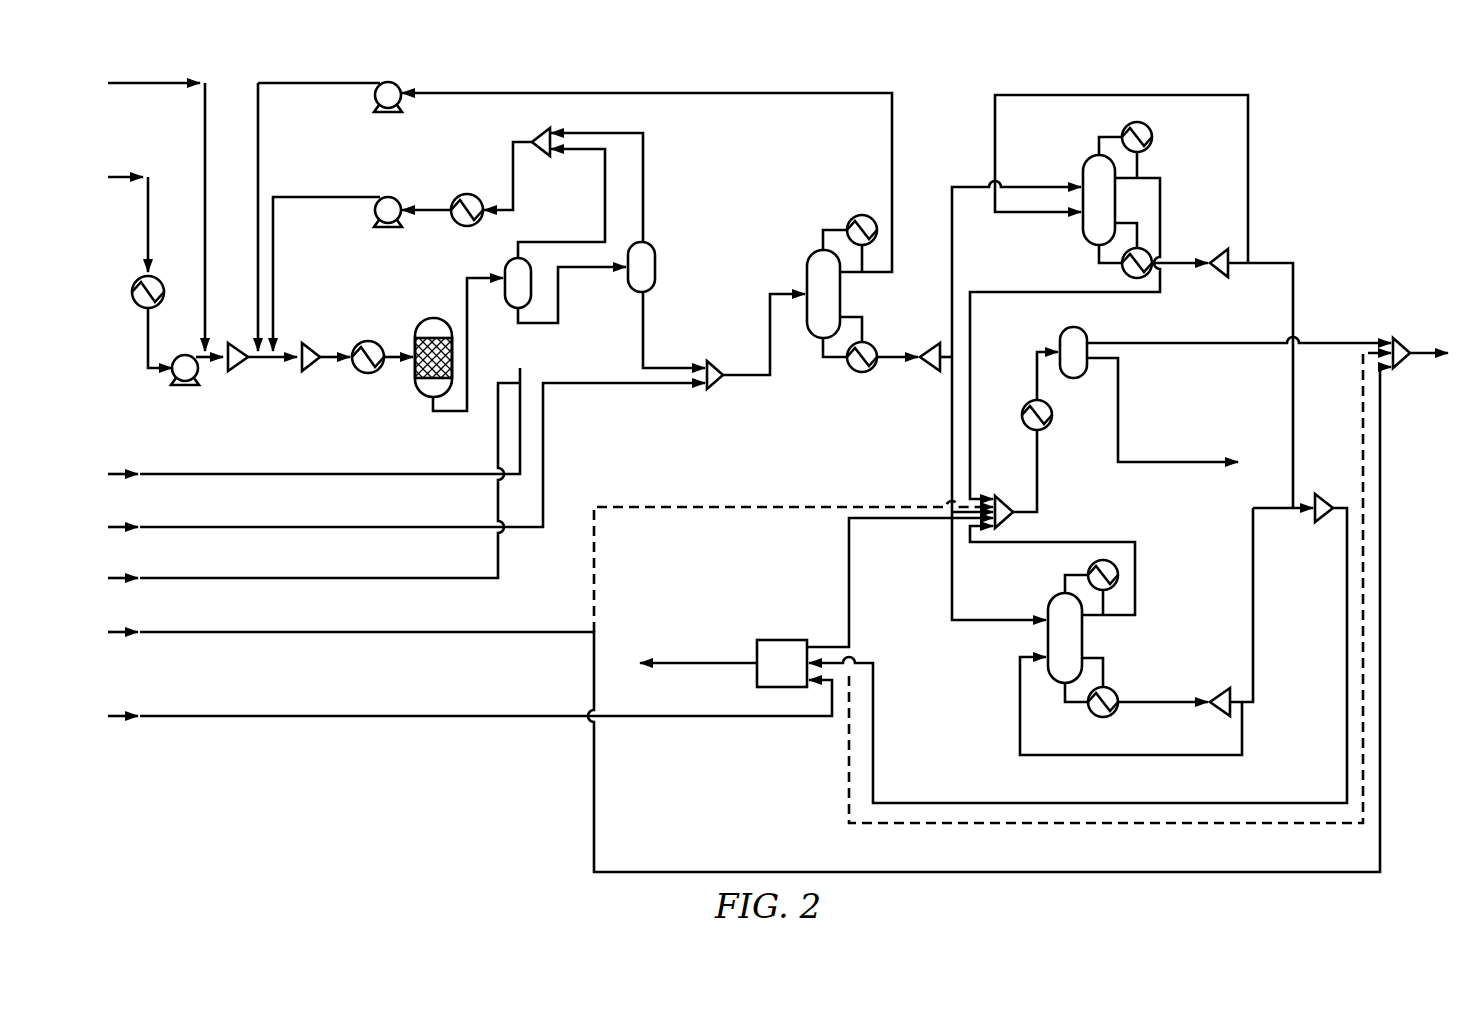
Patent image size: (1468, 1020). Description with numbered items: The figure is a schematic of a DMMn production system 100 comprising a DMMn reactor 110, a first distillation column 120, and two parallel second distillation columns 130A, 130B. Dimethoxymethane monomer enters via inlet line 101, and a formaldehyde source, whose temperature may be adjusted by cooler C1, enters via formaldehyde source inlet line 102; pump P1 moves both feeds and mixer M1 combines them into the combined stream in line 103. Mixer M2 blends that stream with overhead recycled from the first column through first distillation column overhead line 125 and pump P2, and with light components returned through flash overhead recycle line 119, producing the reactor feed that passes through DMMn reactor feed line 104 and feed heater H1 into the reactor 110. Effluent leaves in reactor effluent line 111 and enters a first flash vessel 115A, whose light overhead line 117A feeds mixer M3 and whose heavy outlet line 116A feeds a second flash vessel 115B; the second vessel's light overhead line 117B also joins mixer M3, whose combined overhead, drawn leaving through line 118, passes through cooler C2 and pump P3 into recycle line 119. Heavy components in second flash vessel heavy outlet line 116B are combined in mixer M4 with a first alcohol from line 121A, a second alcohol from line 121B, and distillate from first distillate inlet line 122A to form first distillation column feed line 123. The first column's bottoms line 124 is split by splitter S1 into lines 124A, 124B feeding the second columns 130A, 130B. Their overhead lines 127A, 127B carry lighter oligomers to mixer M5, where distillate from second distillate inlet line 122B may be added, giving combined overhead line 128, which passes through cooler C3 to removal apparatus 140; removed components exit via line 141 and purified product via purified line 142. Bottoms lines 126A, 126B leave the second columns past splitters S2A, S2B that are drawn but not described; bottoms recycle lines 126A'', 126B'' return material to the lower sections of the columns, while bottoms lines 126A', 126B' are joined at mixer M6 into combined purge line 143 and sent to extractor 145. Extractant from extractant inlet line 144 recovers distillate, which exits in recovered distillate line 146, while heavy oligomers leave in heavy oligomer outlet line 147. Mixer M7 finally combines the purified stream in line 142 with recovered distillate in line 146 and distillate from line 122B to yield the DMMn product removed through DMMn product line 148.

The DMMn production system 100 is at (1255, 44).
The DMM1 inlet line 101 is at (170, 83).
The formaldehyde source inlet line 102 is at (148, 210).
The combined stream line 103 is at (254, 360).
The DMMn reactor feed line 104 is at (325, 360).
The DMMn reactor 110 is at (428, 397).
The reactor effluent line 111 is at (467, 292).
The first flash vessel 115A is at (505, 270).
The second flash vessel 115B is at (655, 267).
The first flash vessel heavy outlet line 116A is at (540, 323).
The second flash vessel heavy outlet line 116B is at (643, 320).
The first flash vessel light overhead line 117A is at (538, 242).
The second flash vessel light overhead line 117B is at (643, 185).
The combined vapor stream 118 is at (513, 172).
The flash overhead recycle line 119 is at (300, 197).
The first distillation column 120 is at (807, 262).
The first distillation column feed line 123 is at (758, 375).
The first distillation column bottoms line 124 is at (900, 357).
The first distillation column overhead line 125 is at (892, 150).
The line 124A is at (952, 260).
The line 124B is at (952, 462).
The second distillation column bottoms line 126A is at (1169, 279).
The second distillation column bottoms line 126A' is at (1296, 369).
The second distillation column bottoms recycle line 126A'' is at (1170, 179).
The second distillation column bottoms line 126B is at (1160, 718).
The second distillation column bottoms line 126B' is at (1287, 605).
The second distillation column bottoms recycle line 126B'' is at (1137, 723).
The second distillation column overhead line 127A is at (1160, 190).
The second distillation column overhead line 127B is at (1135, 580).
The second distillation column combined overhead line 128 is at (1037, 490).
The second distillation column 130A is at (1085, 165).
The second distillation column 130B is at (1082, 638).
The removal apparatus 140 is at (1082, 330).
The removed component(s) line 141 is at (1118, 400).
The purified DMM2-5 line 142 is at (1195, 343).
The combined second distillation column purge line 143 is at (1347, 640).
The extractant inlet line 144 is at (203, 716).
The extractor 145 is at (785, 640).
The recovered distillate line 146 is at (830, 647).
The heavy oligomer outlet line 147 is at (690, 663).
The DMMn product line 148 is at (1420, 355).
The line 121A is at (203, 474).
The line 121B is at (203, 527).
The first distillate inlet line 122A is at (203, 578).
The second distillate inlet line 122B is at (203, 632).
The cooler C1 is at (148, 305).
The cooler C2 is at (467, 194).
The cooler C3 is at (1048, 425).
The feed heater H1 is at (368, 341).
The pump P1 is at (185, 383).
The pump P2 is at (380, 107).
The pump P3 is at (380, 222).
The mixer M1 is at (238, 345).
The mixer M2 is at (312, 345).
The mixer M3 is at (535, 135).
The mixer M4 is at (720, 385).
The mixer M5 is at (1003, 500).
The mixer M6 is at (1322, 500).
The mixer M7 is at (1395, 345).
The splitter S1 is at (928, 345).
The splitter S2A is at (1218, 252).
The splitter S2B is at (1218, 690).